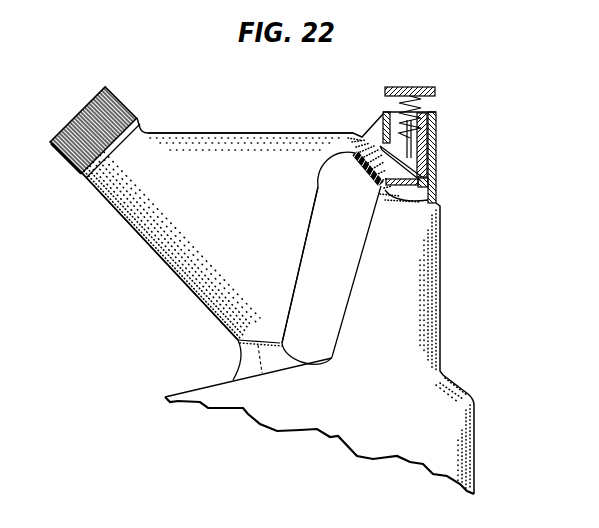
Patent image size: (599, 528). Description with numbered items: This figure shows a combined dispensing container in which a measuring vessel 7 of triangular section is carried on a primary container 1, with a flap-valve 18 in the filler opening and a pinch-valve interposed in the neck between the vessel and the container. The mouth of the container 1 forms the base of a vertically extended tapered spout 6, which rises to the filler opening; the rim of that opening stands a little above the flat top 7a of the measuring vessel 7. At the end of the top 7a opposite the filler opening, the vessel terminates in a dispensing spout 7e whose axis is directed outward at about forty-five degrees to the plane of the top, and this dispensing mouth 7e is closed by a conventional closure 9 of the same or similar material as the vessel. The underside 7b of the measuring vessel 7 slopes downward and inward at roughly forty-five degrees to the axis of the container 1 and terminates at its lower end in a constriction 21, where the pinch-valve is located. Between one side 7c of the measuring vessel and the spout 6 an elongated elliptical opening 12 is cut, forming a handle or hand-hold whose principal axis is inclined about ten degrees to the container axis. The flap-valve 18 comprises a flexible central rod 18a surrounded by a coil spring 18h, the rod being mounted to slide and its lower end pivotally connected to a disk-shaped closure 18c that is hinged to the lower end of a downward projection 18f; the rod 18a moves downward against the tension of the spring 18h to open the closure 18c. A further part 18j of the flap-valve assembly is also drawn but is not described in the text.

The container 1 is at (257, 404).
The tapered spout 6 is at (415, 297).
The measuring vessel 7 is at (197, 145).
The flat top 7a is at (250, 135).
The underside 7b is at (145, 246).
The side 7c is at (315, 200).
The dispensing spout 7e is at (83, 173).
The closure 9 is at (82, 115).
The elongated elliptical opening 12 is at (324, 260).
The flap-valve 18 is at (427, 87).
The central rod 18a is at (408, 87).
The disk-shaped closure 18c is at (432, 175).
The downward projection 18f is at (435, 135).
The coil spring 18h is at (418, 100).
The valve outlet 18j is at (418, 190).
The constriction 21 is at (252, 357).